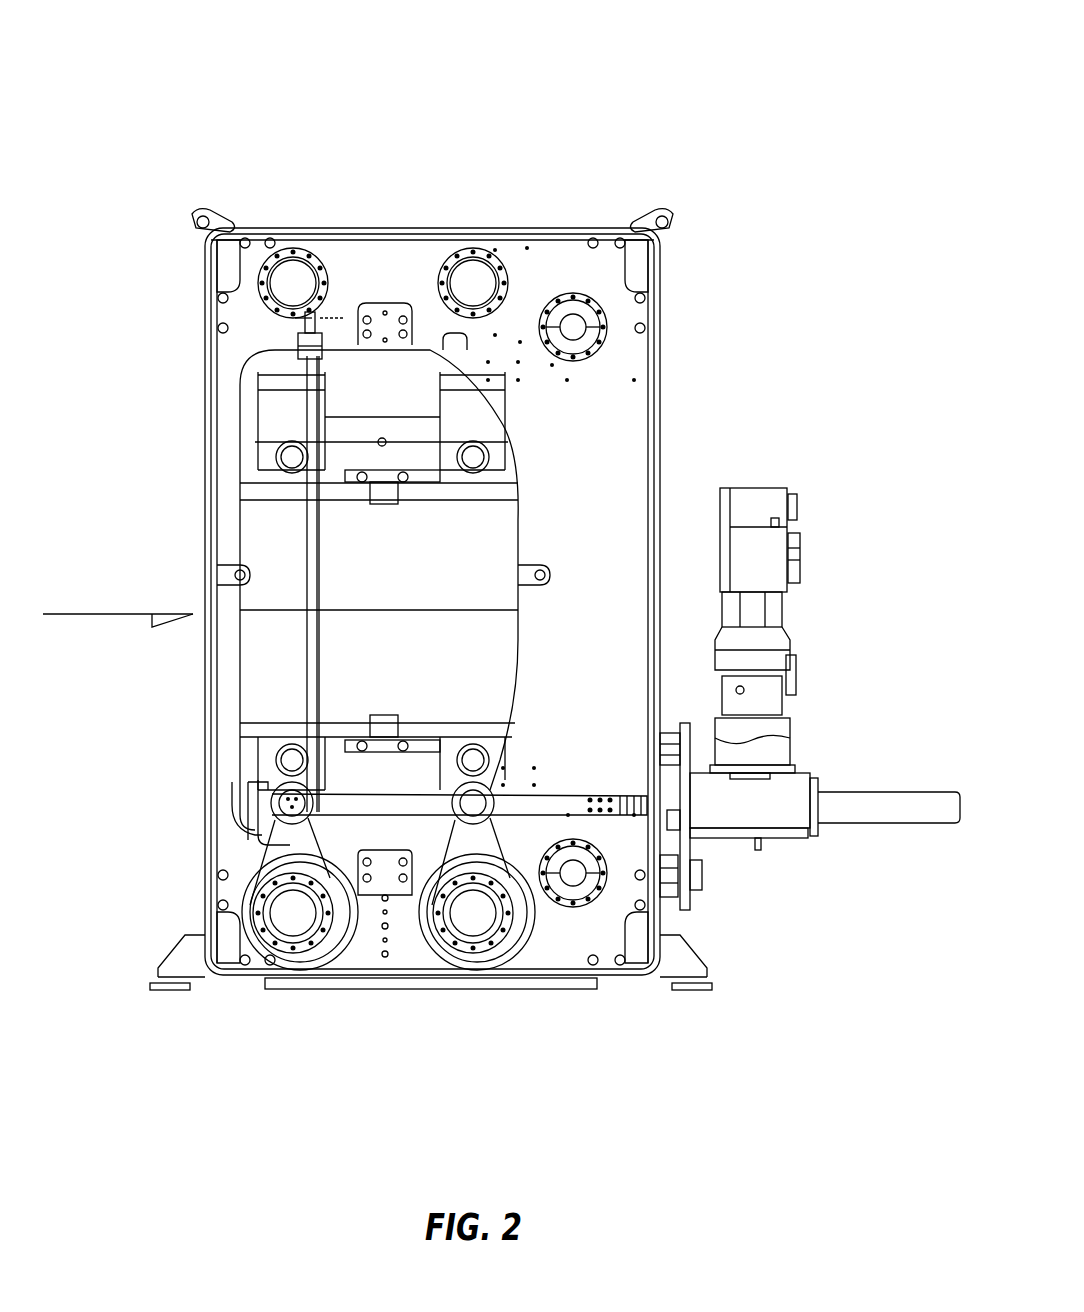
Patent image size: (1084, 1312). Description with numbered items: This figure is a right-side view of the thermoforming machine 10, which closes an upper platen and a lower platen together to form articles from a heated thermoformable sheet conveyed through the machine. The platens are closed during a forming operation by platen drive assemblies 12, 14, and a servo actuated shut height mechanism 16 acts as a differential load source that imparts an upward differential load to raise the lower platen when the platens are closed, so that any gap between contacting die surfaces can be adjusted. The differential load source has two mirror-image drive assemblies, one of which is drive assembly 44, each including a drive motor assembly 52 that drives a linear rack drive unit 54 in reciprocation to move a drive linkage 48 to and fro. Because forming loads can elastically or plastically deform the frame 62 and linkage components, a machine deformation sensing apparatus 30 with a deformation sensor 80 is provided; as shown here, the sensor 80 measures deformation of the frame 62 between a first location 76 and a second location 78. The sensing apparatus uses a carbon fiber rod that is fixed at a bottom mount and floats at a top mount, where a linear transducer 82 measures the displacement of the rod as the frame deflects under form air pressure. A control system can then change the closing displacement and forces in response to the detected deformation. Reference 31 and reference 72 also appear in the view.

The thermoforming machine 10 is at (173, 100).
The platen drive assembly 12 is at (232, 427).
The platen drive assembly 14 is at (232, 790).
The servo actuated shut height (SASH) mechanism 16 is at (868, 652).
The machine deformation sensing apparatus 30 is at (277, 331).
The cable 31 is at (85, 614).
The drive assembly 44 is at (820, 762).
The drive linkage 48 is at (240, 830).
The drive motor assembly 52 is at (814, 500).
The linear rack drive unit 54 is at (772, 840).
The frame 62 is at (528, 227).
The side plate 72 is at (597, 459).
The first location 76 is at (300, 338).
The second location 78 is at (362, 882).
The deformation sensor 80 is at (317, 578).
The linear transducer 82 is at (318, 532).